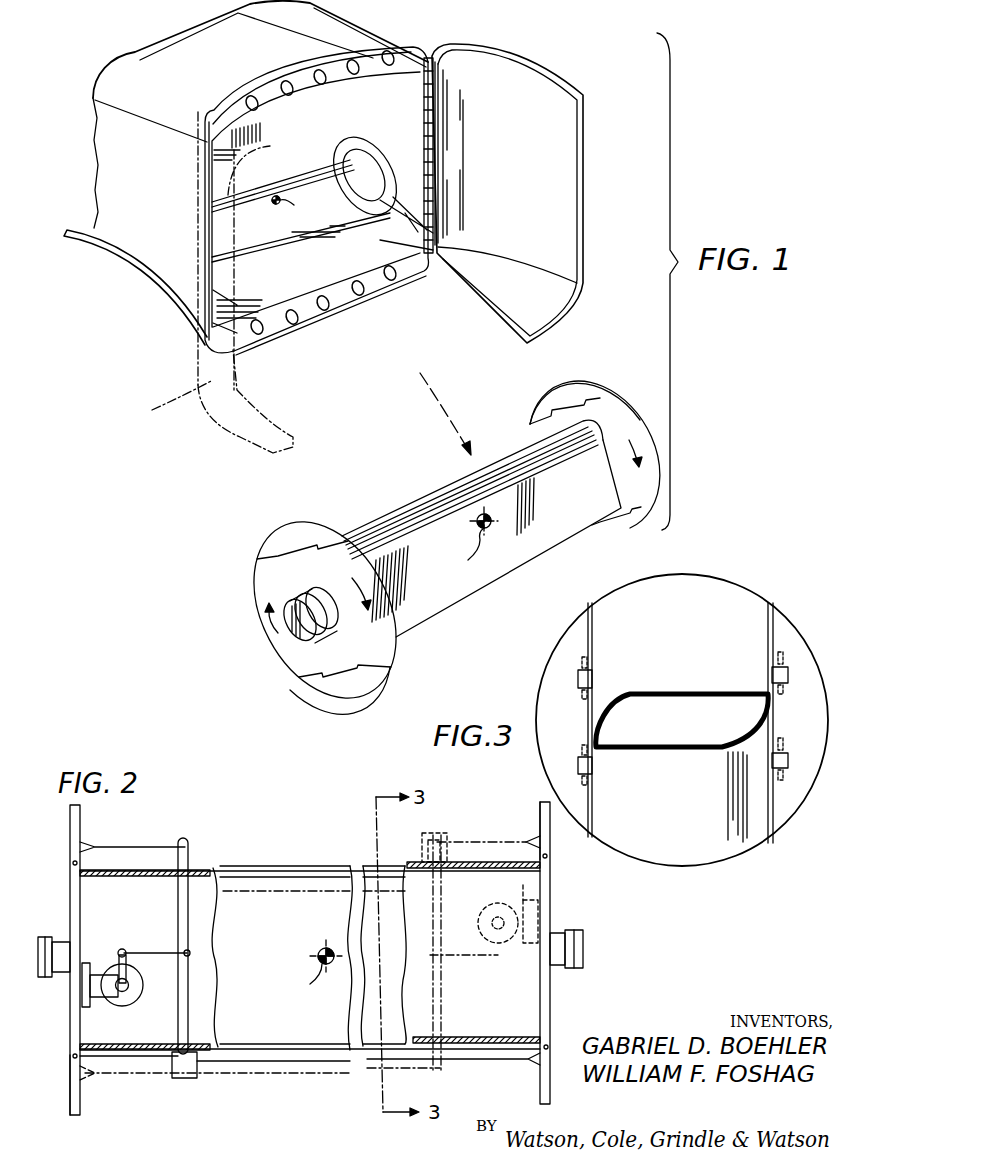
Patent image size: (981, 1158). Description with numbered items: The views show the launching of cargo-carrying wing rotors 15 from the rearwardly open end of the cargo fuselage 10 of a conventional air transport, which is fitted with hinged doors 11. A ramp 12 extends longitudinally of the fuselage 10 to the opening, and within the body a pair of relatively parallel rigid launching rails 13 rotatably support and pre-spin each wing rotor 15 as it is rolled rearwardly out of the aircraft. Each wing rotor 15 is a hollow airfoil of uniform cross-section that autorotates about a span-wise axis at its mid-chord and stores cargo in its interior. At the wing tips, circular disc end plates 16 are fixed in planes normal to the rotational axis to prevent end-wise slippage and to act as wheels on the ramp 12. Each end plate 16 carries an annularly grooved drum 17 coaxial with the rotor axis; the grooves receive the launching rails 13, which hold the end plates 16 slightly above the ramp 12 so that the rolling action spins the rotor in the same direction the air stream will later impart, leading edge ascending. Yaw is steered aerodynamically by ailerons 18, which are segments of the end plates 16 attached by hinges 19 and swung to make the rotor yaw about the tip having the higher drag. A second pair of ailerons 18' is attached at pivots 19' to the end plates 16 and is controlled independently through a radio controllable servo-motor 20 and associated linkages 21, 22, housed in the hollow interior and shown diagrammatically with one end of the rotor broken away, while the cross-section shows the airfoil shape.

In FIG. 1, the cargo fuselage 10 is at (153, 267).
In FIG. 1, the hinged doors 11 is at (560, 148).
In FIG. 1, the ramp 12 is at (316, 266).
In FIG. 1, the launching rails 13 is at (220, 297).
In FIG. 1, the wing rotor 15 is at (270, 222).
In FIG. 3, the wing rotor 15 is at (716, 690).
In FIG. 2, the wing rotor 15 is at (318, 880).
In FIG. 1, the end plates 16 is at (277, 649).
In FIG. 3, the end plates 16 is at (673, 805).
In FIG. 2, the end plates 16 is at (80, 910).
In FIG. 2, the grooved drums 17 is at (58, 935).
In FIG. 1, the ailerons 18 is at (442, 552).
In FIG. 3, the ailerons 18 is at (652, 712).
In FIG. 2, the ailerons 18 is at (289, 958).
In FIG. 1, the second ailerons 18' is at (465, 540).
In FIG. 2, the second ailerons 18' is at (288, 960).
In FIG. 1, the hinge 19 is at (452, 478).
In FIG. 3, the hinge 19 is at (683, 707).
In FIG. 2, the hinge 19 is at (313, 953).
In FIG. 1, the pivot 19' is at (461, 549).
In FIG. 2, the pivot 19' is at (311, 960).
In FIG. 2, the servo-motor 20 is at (93, 968).
In FIG. 2, the roller 21 is at (142, 980).
In FIG. 2, the rod 22 is at (126, 950).